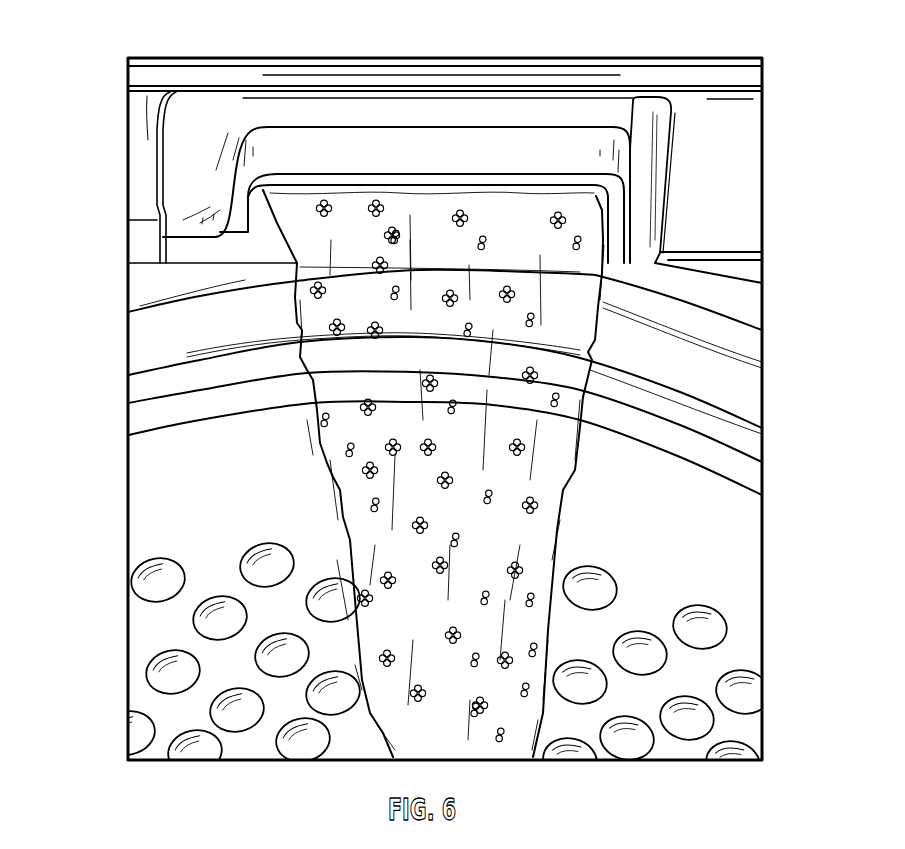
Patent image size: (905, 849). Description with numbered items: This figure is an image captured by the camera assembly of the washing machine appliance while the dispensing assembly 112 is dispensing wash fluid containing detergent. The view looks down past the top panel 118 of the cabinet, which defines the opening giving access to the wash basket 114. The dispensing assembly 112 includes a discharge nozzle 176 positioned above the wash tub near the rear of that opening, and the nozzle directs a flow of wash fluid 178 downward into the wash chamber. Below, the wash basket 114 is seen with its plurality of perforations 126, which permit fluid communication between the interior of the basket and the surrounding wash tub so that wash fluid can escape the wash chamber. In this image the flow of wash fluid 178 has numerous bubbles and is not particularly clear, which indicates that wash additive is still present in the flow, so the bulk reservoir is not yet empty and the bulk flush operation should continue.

The dispensing assembly 112 is at (606, 142).
The wash basket 114 is at (157, 627).
The top panel 118 is at (742, 171).
The perforations 126 is at (173, 672).
The discharge nozzle 176 is at (577, 207).
The flow of wash fluid 178 is at (567, 442).